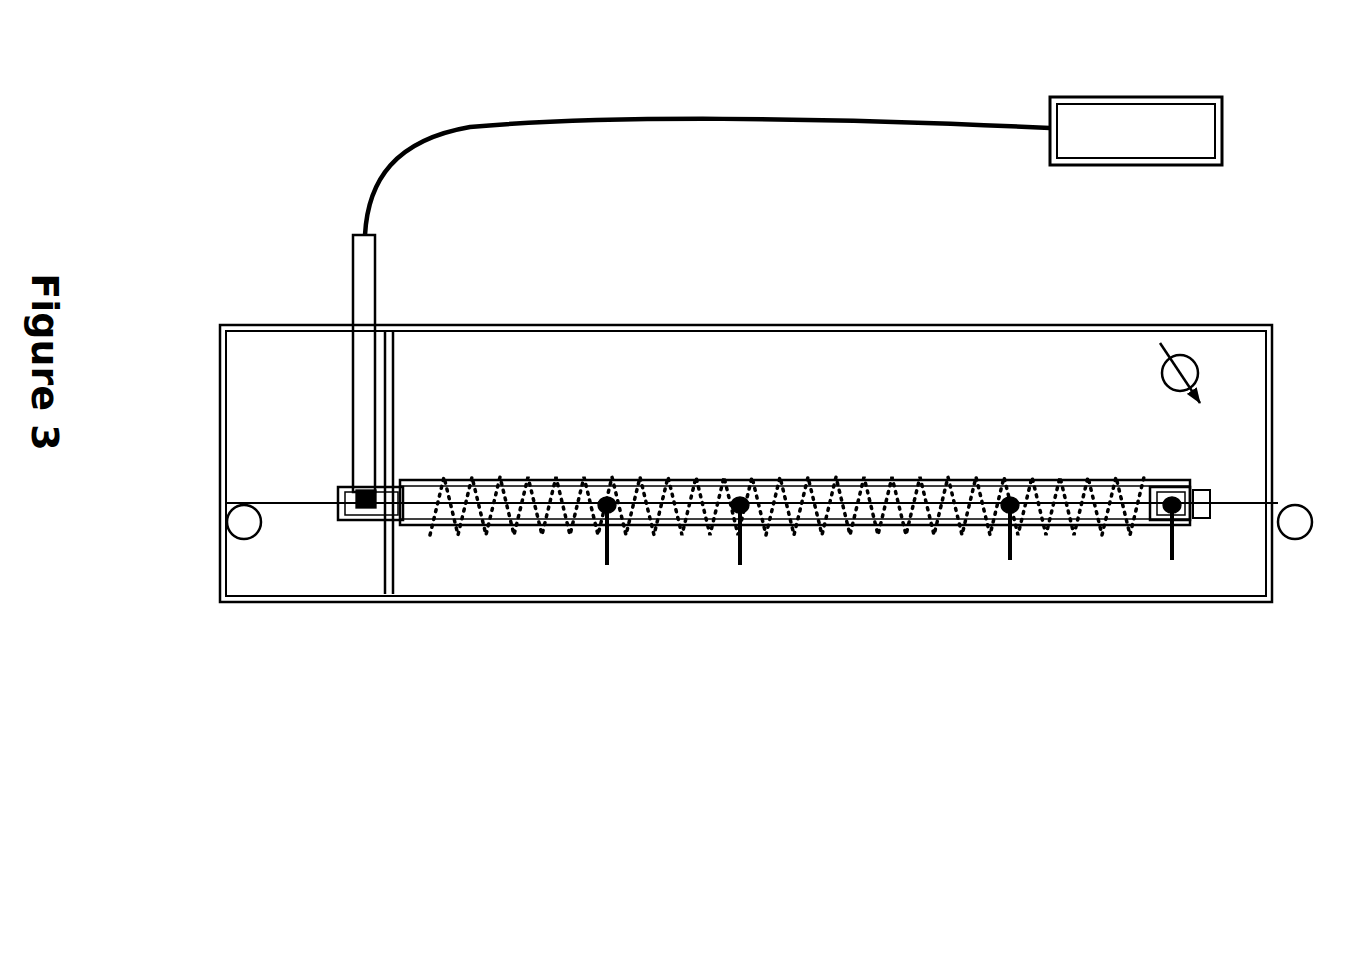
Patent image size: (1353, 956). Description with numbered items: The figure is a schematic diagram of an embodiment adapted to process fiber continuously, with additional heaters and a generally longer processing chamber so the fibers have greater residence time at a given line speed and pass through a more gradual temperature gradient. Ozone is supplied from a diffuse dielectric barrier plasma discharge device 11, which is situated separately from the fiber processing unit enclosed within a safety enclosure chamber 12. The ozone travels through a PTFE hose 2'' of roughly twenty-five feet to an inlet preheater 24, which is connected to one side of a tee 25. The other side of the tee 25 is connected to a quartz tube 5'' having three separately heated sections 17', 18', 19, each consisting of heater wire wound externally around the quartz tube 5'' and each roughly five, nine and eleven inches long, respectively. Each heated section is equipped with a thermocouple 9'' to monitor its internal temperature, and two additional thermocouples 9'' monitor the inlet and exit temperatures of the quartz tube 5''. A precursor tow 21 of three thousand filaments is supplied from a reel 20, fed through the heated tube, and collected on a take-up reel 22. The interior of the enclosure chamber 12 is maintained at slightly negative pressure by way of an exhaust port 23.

The safety enclosure chamber 12 is at (278, 318).
The diffuse dielectric barrier plasma discharge device 11 is at (1047, 120).
The PTFE hose 2'' is at (707, 177).
The inlet preheater 24 is at (370, 378).
The quartz tube 5'' is at (805, 385).
The tee 25 is at (327, 574).
The heated section 17' is at (779, 569).
The heated section 18' is at (686, 582).
The heated section 19 is at (952, 582).
The thermocouple 9'' is at (891, 579).
The precursor tow 21 is at (703, 429).
The reel 20 is at (182, 502).
The take-up reel 22 is at (1301, 503).
The exhaust port 23 is at (1198, 350).